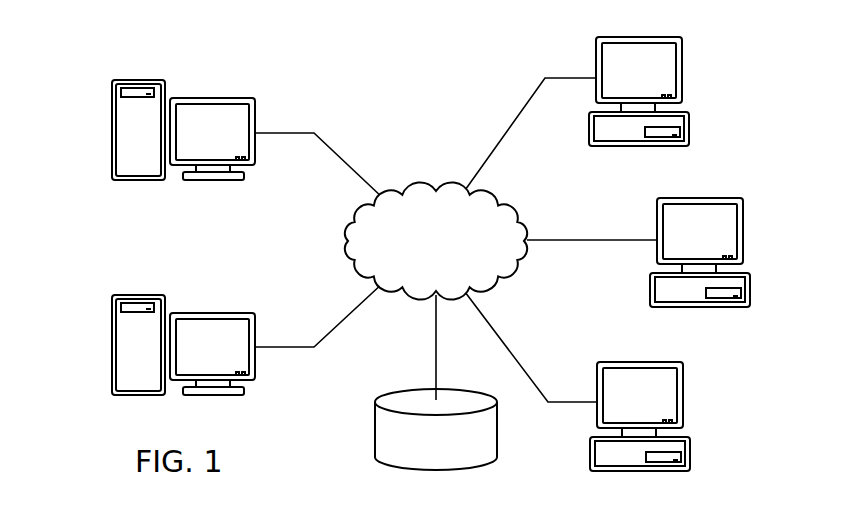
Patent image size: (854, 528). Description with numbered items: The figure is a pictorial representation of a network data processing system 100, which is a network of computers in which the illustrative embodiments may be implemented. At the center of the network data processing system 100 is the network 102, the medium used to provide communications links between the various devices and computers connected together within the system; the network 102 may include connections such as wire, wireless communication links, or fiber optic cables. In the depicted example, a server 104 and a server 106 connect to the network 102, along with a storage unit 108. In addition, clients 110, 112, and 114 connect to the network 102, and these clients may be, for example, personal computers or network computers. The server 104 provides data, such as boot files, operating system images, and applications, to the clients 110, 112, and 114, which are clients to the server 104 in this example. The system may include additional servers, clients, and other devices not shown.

The network data processing system 100 is at (338, 69).
The network 102 is at (430, 188).
The server 104 is at (112, 128).
The server 106 is at (112, 345).
The storage unit 108 is at (375, 432).
The client 110 is at (690, 128).
The client 112 is at (750, 290).
The client 114 is at (690, 453).